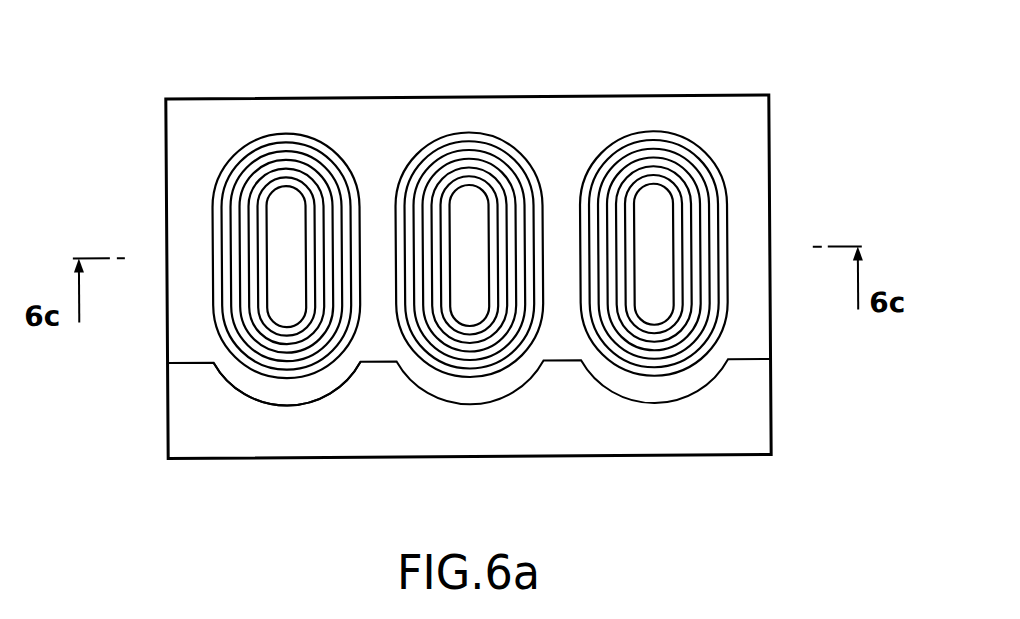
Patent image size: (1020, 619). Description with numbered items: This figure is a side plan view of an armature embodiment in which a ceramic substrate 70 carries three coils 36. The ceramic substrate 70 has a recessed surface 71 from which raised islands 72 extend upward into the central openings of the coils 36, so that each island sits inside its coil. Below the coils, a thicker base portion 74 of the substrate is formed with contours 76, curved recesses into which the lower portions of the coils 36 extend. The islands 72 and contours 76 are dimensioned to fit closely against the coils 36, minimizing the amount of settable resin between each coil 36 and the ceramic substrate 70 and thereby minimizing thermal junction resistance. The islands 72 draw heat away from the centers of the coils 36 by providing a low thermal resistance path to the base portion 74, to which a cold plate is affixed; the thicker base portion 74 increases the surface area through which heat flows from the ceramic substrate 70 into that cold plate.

The ceramic substrate 70 is at (458, 278).
The recessed surface 71 is at (210, 118).
The coils 36 is at (620, 137).
The raised islands 72 is at (265, 222).
The base portion 74 is at (192, 437).
The contours 76 is at (293, 407).